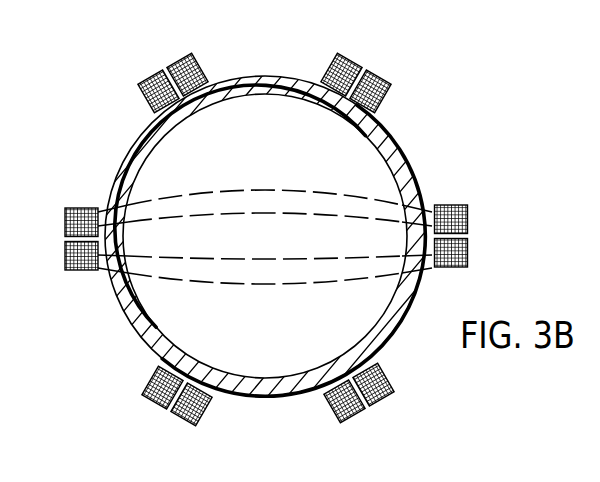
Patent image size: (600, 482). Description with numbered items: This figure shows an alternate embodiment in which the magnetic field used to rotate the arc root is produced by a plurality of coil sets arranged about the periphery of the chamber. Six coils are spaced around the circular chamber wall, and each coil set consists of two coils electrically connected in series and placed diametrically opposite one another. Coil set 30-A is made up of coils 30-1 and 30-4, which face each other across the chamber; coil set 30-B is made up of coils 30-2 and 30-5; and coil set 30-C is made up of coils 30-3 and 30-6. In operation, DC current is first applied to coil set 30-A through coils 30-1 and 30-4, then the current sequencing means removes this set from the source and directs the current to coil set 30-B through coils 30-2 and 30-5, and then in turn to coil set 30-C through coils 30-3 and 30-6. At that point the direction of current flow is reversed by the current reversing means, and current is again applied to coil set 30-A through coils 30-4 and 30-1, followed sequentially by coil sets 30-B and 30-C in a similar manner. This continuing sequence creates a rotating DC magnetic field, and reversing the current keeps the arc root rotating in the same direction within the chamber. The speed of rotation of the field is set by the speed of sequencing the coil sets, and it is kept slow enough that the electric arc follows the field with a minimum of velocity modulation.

The coil 30-1 is at (61, 239).
The coil 30-2 is at (177, 408).
The coil 30-3 is at (414, 422).
The coil 30-4 is at (513, 201).
The coil 30-5 is at (406, 43).
The coil 30-6 is at (173, 71).
The coil set 30-A is at (499, 234).
The coil set 30-B is at (368, 56).
The coil set 30-C is at (377, 417).